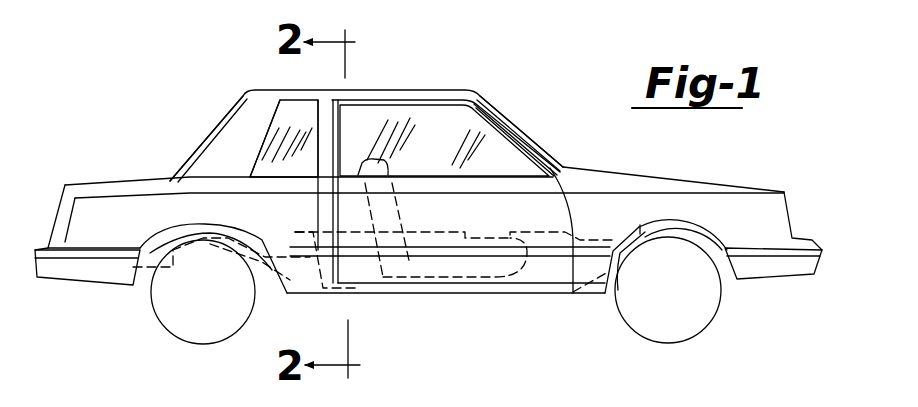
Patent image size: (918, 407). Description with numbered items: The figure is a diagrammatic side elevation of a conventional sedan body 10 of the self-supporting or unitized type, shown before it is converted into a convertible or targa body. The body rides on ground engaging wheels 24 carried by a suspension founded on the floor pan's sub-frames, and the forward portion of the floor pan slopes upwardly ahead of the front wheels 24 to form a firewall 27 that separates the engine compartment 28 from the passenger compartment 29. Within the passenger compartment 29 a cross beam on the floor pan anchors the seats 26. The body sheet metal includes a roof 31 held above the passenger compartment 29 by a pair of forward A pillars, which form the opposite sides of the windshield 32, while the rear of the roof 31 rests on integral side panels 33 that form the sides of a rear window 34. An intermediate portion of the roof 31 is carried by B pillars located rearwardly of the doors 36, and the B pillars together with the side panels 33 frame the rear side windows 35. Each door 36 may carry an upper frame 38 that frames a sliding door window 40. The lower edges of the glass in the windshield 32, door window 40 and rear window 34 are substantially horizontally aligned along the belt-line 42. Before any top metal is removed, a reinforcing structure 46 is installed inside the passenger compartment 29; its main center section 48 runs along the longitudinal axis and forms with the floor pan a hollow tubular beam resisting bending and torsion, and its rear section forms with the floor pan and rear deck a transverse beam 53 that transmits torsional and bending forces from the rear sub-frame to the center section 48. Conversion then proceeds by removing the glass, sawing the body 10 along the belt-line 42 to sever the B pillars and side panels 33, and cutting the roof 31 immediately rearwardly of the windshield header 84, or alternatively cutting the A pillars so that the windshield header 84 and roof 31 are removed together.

The sedan body 10 is at (576, 152).
The ground engaging wheels 24 is at (710, 323).
The seats 26 is at (383, 167).
The firewall 27 is at (610, 268).
The engine compartment 28 is at (682, 203).
The passenger compartment 29 is at (512, 123).
The roof 31 is at (382, 90).
The windshield 32 is at (523, 137).
The side panels 33 is at (222, 152).
The rear window 34 is at (215, 127).
The rear side windows 35 is at (283, 113).
The doors 36 is at (363, 270).
The upper frame 38 is at (408, 107).
The door window 40 is at (483, 138).
The belt-line 42 is at (283, 170).
The reinforcing structure 46 is at (537, 226).
The main center section 48 is at (340, 406).
The transverse beam 53 is at (311, 266).
The windshield header 84 is at (465, 135).
The A pillars A is at (524, 131).
The B pillars B is at (323, 135).